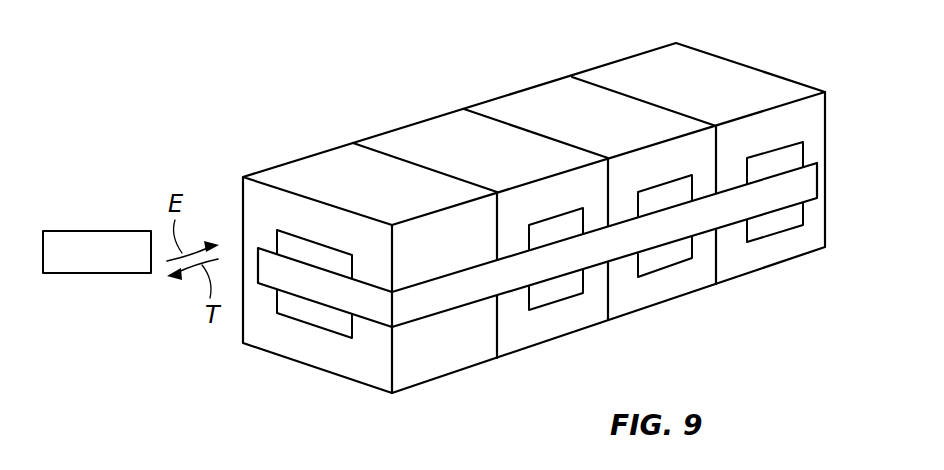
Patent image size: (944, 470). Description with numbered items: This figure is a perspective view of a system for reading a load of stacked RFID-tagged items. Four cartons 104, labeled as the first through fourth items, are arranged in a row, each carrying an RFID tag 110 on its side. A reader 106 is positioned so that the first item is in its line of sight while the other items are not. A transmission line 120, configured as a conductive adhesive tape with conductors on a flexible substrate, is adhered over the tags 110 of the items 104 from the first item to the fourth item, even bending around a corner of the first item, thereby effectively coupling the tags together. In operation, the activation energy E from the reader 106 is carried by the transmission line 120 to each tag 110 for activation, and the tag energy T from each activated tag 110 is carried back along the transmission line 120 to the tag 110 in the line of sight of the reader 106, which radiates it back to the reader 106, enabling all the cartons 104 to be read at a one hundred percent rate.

The carton 104 is at (298, 155).
The reader 106 is at (97, 230).
The tag 110 is at (313, 328).
The transmission line 120 is at (818, 179).